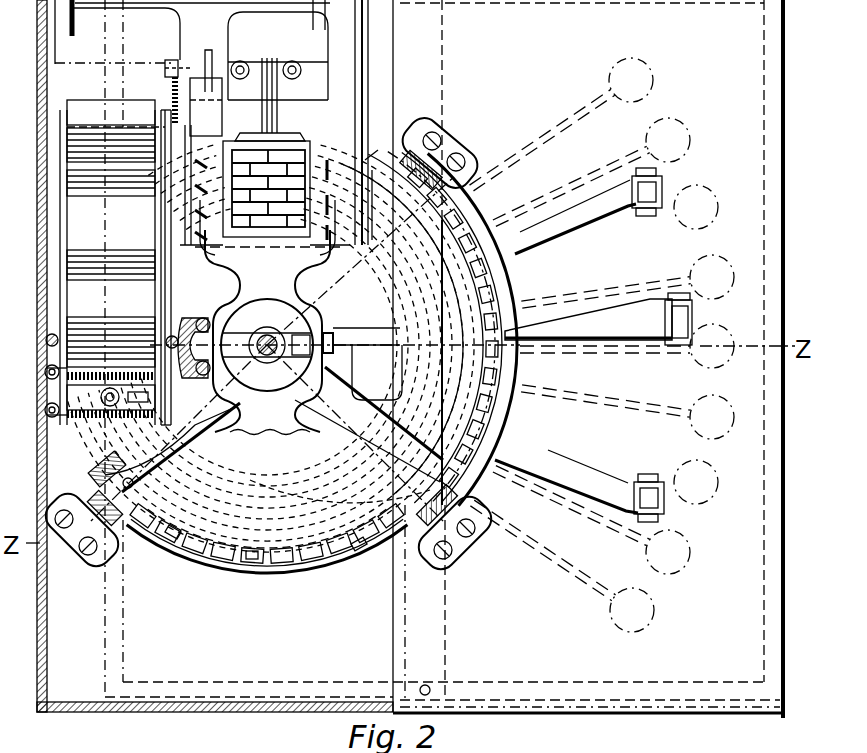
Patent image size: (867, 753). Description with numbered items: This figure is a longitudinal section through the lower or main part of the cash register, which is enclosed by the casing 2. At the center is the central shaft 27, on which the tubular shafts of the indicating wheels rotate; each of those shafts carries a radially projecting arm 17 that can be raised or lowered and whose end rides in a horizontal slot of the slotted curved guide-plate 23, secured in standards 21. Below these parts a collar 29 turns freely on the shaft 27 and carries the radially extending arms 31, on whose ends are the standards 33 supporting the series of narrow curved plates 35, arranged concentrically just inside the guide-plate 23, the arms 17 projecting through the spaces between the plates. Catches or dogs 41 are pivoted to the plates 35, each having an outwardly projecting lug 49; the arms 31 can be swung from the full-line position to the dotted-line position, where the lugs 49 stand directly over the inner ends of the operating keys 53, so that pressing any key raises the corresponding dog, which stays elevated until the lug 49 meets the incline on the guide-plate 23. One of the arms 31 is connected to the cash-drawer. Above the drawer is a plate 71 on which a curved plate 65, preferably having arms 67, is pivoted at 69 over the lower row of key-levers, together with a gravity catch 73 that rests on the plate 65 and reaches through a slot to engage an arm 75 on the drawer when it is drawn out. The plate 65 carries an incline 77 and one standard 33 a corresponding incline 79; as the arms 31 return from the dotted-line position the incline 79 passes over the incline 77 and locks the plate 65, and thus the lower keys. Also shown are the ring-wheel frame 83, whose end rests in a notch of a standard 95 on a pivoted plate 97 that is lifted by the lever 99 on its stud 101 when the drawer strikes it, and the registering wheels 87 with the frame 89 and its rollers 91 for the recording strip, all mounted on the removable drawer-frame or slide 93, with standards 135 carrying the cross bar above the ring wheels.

The casing 2 is at (110, 706).
The radially projecting arm 17 is at (432, 540).
The standards 21 is at (80, 550).
The slotted curved guide-plate 23 is at (300, 572).
The central shaft 27 is at (263, 330).
The collar 29 is at (250, 390).
The radially extending arms 31 is at (233, 407).
The standards 33 is at (100, 462).
The narrow curved plates 35 is at (258, 565).
The catches or dogs 41 is at (193, 550).
The outwardly projecting lug 49 is at (167, 548).
The operating keys 53 is at (622, 297).
The curved plate 65 is at (520, 368).
The arms 67 is at (588, 447).
The pivot 69 is at (646, 214).
The plate 71 is at (608, 553).
The gravity catch 73 is at (572, 334).
The arm 75 is at (284, 359).
The incline 77 is at (402, 158).
The incline 79 is at (372, 148).
The frame 83 is at (265, 231).
The registering wheels 87 is at (292, 140).
The frame 89 is at (157, 292).
The rollers 91 is at (27, 320).
The drawer-frame or slide 93 is at (139, 54).
The standard 95 is at (203, 62).
The pivoted plate 97 is at (204, 73).
The lever 99 is at (255, 88).
The stud 101 is at (262, 62).
The standards 135 is at (42, 350).